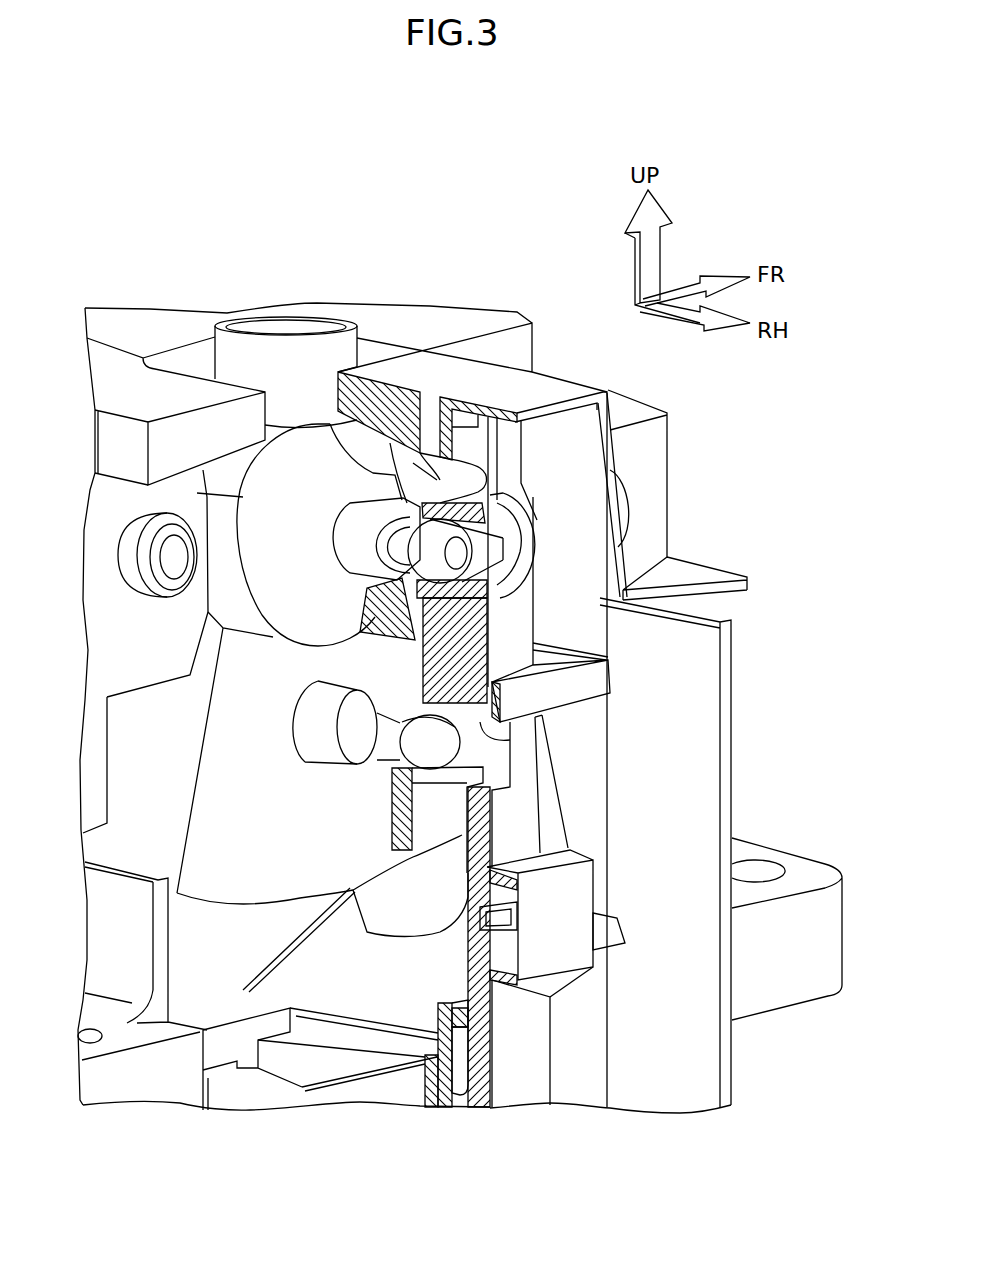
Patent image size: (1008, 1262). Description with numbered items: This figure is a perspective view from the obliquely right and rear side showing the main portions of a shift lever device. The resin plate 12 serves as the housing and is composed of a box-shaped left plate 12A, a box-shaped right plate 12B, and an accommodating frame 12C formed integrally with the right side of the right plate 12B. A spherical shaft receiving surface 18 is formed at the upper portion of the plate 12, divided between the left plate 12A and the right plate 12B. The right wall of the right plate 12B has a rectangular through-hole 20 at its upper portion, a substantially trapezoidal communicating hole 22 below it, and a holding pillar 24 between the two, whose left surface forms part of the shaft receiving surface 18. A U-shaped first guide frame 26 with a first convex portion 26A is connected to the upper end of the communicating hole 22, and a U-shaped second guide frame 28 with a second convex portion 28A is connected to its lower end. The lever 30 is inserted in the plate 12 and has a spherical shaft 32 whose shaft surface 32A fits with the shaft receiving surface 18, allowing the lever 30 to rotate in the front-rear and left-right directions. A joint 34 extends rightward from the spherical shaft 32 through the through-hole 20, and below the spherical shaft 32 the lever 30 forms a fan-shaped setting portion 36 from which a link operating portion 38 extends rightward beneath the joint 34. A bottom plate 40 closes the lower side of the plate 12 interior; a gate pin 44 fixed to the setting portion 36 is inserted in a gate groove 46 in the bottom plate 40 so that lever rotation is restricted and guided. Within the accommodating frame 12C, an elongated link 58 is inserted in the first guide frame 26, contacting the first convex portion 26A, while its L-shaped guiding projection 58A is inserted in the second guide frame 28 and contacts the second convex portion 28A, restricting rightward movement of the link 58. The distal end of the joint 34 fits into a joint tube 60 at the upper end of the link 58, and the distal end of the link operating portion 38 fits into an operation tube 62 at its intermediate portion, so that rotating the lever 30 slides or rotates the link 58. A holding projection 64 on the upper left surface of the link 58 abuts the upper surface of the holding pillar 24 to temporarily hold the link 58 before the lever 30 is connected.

The plate 12 is at (134, 320).
The left plate 12A is at (512, 315).
The right plate 12B is at (665, 487).
The accommodating frame 12C is at (733, 690).
The shaft receiving surface 18 is at (335, 440).
The through-hole 20 is at (418, 455).
The communicating hole 22 is at (550, 800).
The holding pillar 24 is at (367, 595).
The first guide frame 26 is at (570, 652).
The first convex portion 26A is at (492, 740).
The second guide frame 28 is at (620, 928).
The second convex portion 28A is at (428, 1023).
The lever 30 is at (197, 738).
The spherical shaft 32 is at (217, 582).
The shaft surface 32A is at (257, 505).
The joint 34 is at (487, 562).
The setting portion 36 is at (195, 790).
The link operating portion 38 is at (462, 750).
The bottom plate 40 is at (358, 1082).
The gate pin 44 is at (430, 936).
The gate groove 46 is at (455, 950).
The link 58 is at (600, 885).
The guiding projection 58A is at (440, 1027).
The joint tube 60 is at (510, 518).
The operation tube 62 is at (395, 676).
The holding projection 64 is at (385, 557).